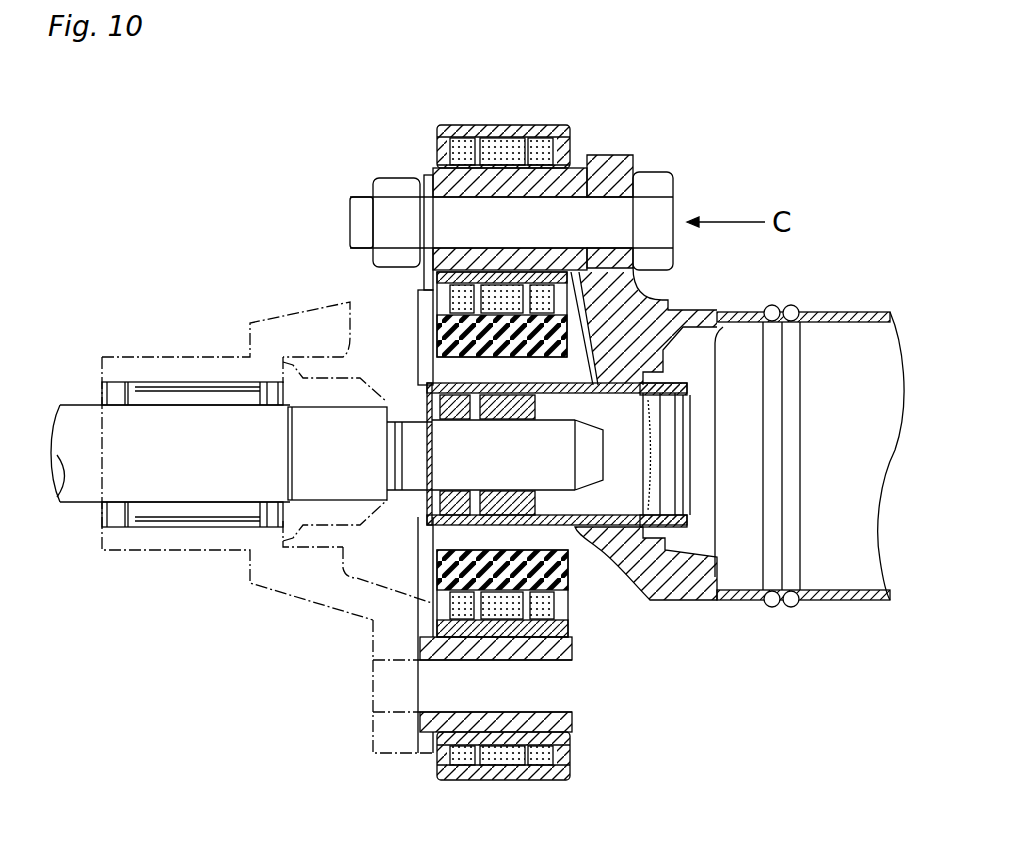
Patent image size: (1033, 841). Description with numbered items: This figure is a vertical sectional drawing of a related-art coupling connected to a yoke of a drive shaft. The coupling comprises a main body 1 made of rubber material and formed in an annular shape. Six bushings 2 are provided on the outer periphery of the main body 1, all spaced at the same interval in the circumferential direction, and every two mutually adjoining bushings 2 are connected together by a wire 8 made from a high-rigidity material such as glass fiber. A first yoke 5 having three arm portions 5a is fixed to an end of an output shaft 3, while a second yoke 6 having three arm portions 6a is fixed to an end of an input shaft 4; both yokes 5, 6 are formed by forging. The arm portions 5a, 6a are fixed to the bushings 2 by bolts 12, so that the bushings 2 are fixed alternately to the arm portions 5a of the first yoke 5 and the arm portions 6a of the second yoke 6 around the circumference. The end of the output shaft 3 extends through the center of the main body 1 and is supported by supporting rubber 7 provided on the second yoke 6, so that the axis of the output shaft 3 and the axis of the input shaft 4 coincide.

The main body 1 is at (535, 125).
The bushings 2 is at (587, 168).
The output shaft 3 is at (172, 490).
The input shaft 4 is at (845, 602).
The first yoke 5 is at (220, 543).
The arm portions 5a is at (380, 743).
The second yoke 6 is at (673, 320).
The arm portions 6a is at (620, 158).
The supporting rubber 7 is at (567, 530).
The wire 8 is at (437, 152).
The bolts 12 is at (660, 208).